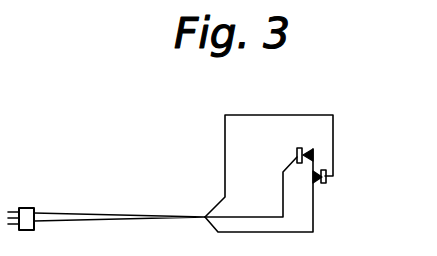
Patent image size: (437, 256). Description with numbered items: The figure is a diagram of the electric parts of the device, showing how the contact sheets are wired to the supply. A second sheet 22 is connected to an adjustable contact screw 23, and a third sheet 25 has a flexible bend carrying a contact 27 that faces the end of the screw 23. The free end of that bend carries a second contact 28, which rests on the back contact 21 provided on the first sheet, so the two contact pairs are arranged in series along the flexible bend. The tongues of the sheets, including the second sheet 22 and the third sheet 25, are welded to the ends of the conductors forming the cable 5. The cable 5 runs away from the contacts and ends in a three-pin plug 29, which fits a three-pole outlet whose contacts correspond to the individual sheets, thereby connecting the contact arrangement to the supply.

The three-pin plug 29 is at (28, 208).
The cable 5 is at (96, 212).
The second sheet 22 is at (283, 172).
The adjustable contact screw 23 is at (298, 149).
The contact 27 is at (309, 150).
The third sheet 25 is at (297, 232).
The second contact 28 is at (318, 183).
The back contact 21 is at (326, 178).